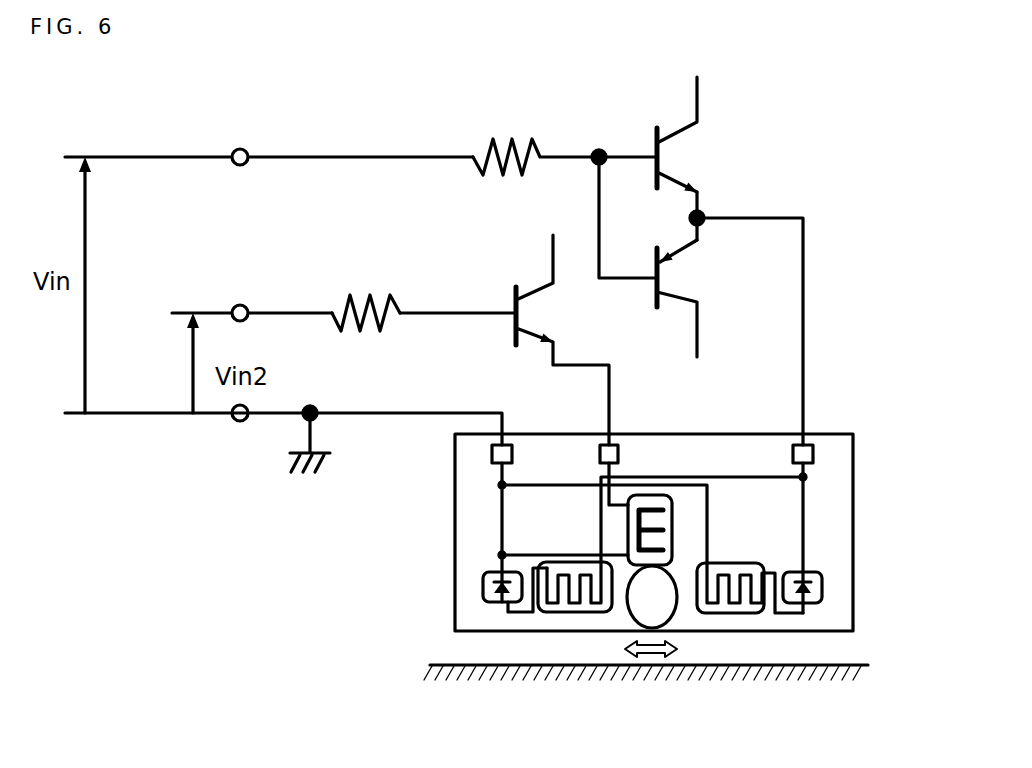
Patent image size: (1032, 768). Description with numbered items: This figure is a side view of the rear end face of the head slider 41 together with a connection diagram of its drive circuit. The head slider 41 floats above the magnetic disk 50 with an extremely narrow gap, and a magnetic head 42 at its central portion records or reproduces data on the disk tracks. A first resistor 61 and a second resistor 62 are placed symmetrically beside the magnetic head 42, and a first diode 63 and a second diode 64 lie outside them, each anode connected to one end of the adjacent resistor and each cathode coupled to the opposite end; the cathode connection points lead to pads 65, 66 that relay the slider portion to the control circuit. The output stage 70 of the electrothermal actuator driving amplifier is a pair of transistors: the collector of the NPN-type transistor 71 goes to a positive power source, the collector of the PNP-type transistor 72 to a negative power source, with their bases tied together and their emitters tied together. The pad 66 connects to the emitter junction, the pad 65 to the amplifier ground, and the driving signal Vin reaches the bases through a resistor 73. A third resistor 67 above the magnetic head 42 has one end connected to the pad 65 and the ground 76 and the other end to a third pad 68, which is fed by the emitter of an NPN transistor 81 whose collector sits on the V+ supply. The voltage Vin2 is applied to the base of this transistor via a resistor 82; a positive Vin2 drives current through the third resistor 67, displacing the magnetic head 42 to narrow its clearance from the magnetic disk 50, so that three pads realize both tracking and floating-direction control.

The head slider 41 is at (855, 602).
The magnetic head 42 is at (652, 622).
The magnetic disk 50 is at (440, 663).
The first resistor 61 is at (582, 616).
The second resistor 62 is at (722, 614).
The first diode 63 is at (497, 606).
The second diode 64 is at (817, 605).
The pad 65 is at (492, 456).
The pad 66 is at (813, 456).
The third resistor 67 is at (648, 493).
The third pad 68 is at (598, 446).
The output stage 70 is at (634, 119).
The NPN-type transistor 71 is at (678, 158).
The PNP-type transistor 72 is at (685, 268).
The resistor 73 is at (493, 150).
The ground 76 is at (300, 462).
The NPN transistor 81 is at (542, 307).
The resistor 82 is at (367, 296).